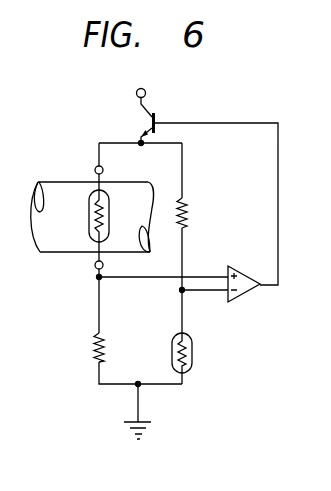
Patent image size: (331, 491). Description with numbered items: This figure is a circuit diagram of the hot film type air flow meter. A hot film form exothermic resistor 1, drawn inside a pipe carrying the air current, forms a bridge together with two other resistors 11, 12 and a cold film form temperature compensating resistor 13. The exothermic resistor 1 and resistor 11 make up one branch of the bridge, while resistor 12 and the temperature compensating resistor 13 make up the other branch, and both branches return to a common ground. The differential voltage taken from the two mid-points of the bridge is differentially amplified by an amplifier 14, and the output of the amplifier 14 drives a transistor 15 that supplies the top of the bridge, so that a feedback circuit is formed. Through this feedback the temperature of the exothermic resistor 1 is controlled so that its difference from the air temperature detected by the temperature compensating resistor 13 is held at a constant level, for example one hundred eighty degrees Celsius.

The hot film form exothermic resistor 1 is at (90, 205).
The resistor 11 is at (90, 351).
The resistor 12 is at (190, 205).
The temperature compensating resistor 13 is at (193, 352).
The amplifier 14 is at (245, 299).
The transistor 15 is at (140, 118).